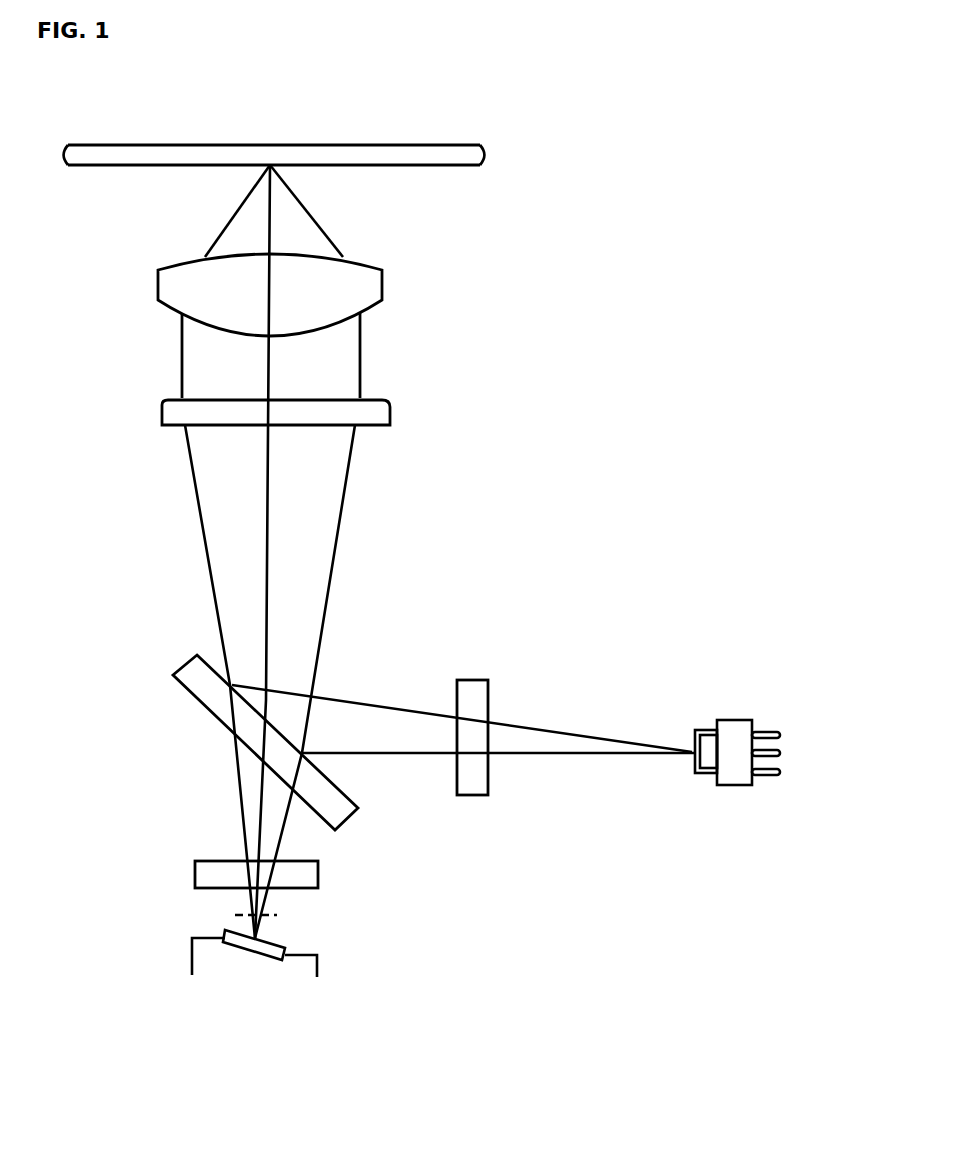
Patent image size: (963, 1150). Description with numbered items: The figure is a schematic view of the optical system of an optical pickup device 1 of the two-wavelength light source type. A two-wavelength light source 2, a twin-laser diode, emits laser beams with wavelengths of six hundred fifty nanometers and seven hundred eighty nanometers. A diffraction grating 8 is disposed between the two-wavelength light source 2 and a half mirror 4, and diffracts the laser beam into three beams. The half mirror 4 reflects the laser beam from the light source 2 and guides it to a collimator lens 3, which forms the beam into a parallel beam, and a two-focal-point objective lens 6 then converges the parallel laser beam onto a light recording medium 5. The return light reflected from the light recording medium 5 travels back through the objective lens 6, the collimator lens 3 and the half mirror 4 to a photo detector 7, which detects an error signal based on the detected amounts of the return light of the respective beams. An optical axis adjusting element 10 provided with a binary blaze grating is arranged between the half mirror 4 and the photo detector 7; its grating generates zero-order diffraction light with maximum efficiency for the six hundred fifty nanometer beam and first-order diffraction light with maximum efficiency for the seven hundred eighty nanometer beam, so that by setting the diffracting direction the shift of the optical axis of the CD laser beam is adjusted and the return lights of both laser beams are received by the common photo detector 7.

The optical pickup device 1 is at (663, 277).
The two-wavelength light source 2 is at (753, 718).
The collimator lens 3 is at (390, 425).
The half mirror 4 is at (190, 690).
The light recording medium 5 is at (323, 146).
The 2-focal point objective lens 6 is at (383, 302).
The photo detector 7 is at (190, 953).
The diffraction grating 8 is at (478, 680).
The optical axis adjusting element 10 is at (318, 870).